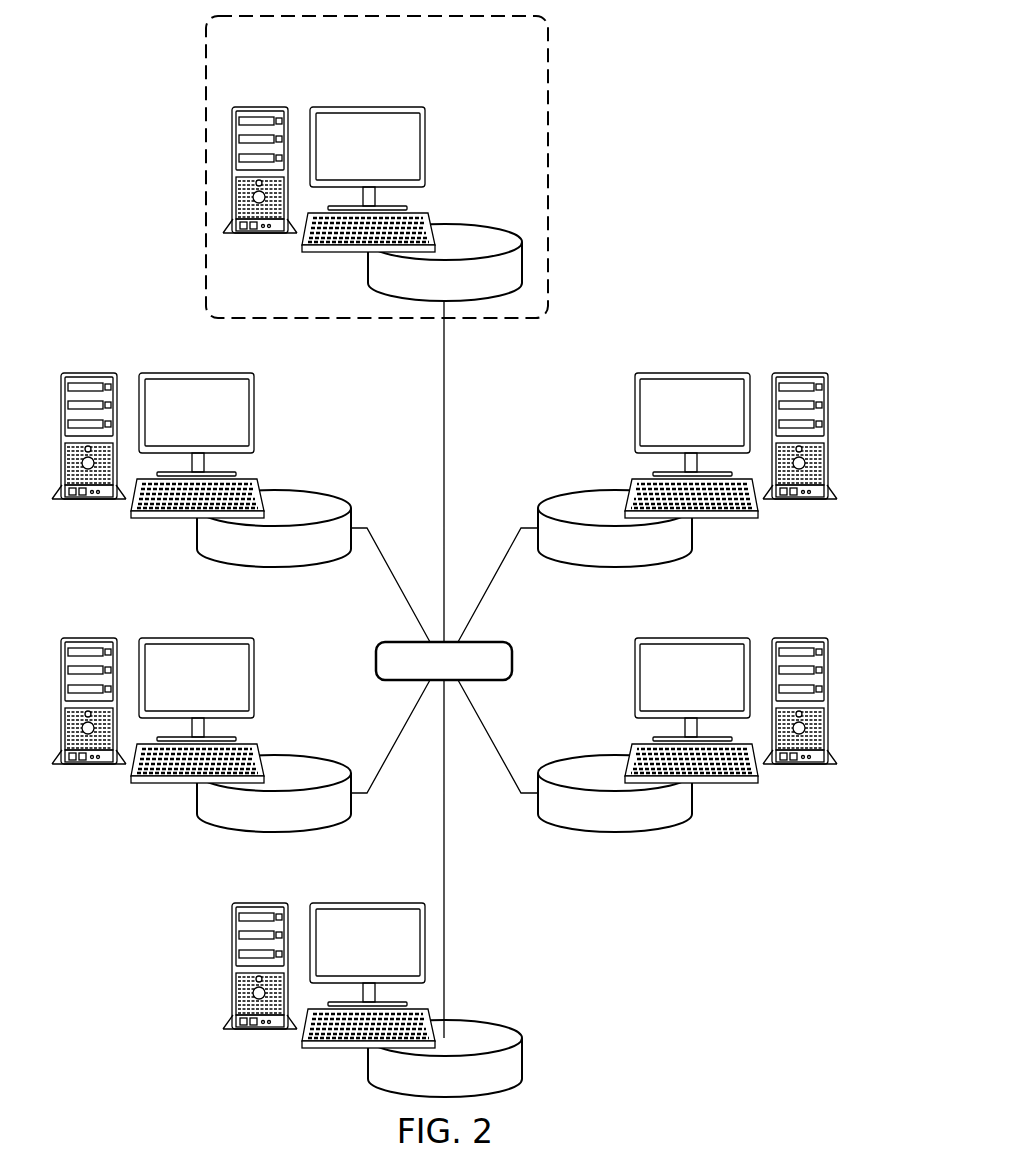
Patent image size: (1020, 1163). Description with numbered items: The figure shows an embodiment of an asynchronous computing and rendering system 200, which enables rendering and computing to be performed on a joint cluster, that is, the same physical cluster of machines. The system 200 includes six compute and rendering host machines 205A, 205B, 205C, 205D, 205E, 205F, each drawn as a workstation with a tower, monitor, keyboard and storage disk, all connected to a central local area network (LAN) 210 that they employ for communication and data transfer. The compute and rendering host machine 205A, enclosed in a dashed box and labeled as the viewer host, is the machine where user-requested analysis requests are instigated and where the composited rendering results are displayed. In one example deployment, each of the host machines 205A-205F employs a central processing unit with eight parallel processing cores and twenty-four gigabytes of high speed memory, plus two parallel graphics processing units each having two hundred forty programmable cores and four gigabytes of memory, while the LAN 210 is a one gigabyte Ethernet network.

The asynchronous computing and rendering system 200 is at (684, 181).
The compute and rendering host machine 205A is at (367, 107).
The compute and rendering host machine 205B is at (196, 373).
The compute and rendering host machine 205C is at (196, 638).
The compute and rendering host machine 205D is at (367, 903).
The compute and rendering host machine 205E is at (692, 638).
The compute and rendering host machine 205F is at (692, 373).
The local area network (LAN) 210 is at (392, 641).